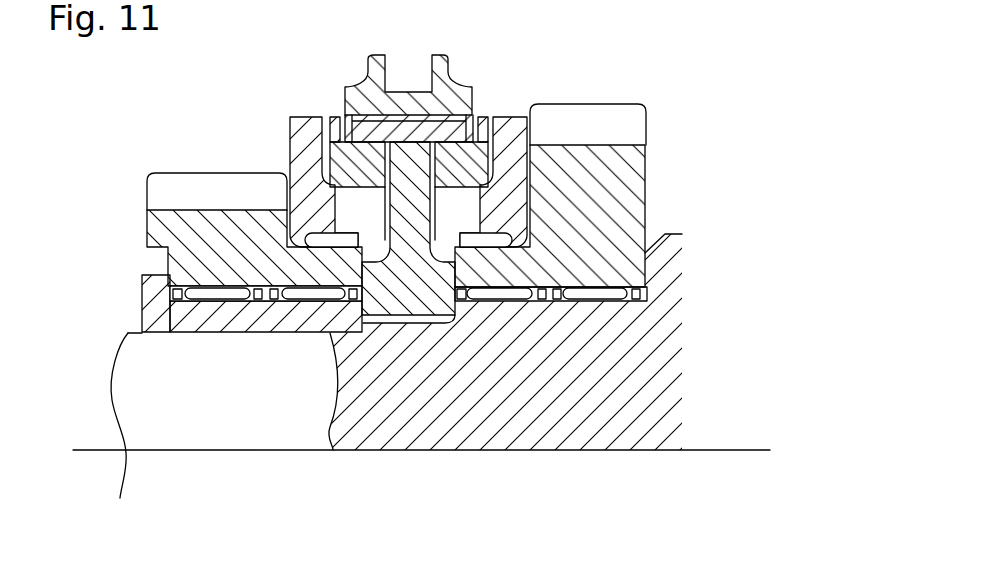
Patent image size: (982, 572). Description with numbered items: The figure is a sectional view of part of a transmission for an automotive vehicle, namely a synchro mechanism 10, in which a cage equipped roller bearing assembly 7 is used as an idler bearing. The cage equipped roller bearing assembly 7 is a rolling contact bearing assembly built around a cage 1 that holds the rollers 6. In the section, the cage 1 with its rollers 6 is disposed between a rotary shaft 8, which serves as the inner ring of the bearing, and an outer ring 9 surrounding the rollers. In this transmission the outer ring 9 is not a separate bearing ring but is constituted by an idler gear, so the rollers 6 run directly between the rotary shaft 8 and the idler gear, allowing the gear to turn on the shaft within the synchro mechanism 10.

The cage 1 is at (173, 332).
The rollers 6 is at (209, 298).
The cage equipped roller bearing assembly 7 is at (408, 412).
The rotary shaft 8 is at (133, 357).
The outer ring 9 is at (192, 220).
The synchro mechanism 10 is at (490, 91).